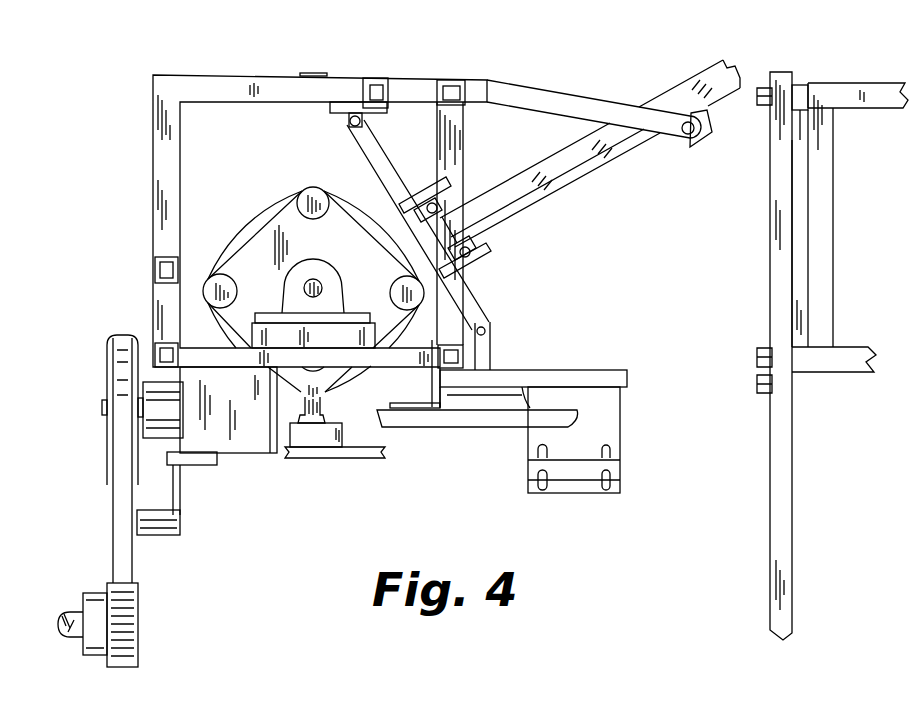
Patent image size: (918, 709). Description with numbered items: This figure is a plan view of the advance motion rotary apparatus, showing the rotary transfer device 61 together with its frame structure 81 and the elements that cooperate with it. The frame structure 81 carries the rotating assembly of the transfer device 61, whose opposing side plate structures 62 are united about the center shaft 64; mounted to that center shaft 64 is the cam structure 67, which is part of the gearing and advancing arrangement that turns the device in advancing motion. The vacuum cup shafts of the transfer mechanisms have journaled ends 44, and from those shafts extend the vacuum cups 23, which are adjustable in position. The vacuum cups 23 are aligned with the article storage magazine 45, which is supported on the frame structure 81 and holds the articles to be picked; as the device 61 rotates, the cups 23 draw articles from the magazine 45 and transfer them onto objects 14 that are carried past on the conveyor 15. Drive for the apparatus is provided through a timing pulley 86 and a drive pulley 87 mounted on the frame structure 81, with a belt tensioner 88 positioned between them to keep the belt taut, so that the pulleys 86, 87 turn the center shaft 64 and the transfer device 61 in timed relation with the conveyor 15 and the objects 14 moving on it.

The frame structure 81 is at (120, 158).
The rotary transfer device 61 is at (313, 264).
The journaled ends 44 is at (320, 197).
The cam structure 67 is at (250, 222).
The side plate structures 62 is at (366, 252).
The center shaft 64 is at (322, 293).
The article storage magazine 45 is at (575, 215).
The vacuum cups 23 is at (321, 418).
The objects 14 is at (325, 440).
The conveyor 15 is at (375, 455).
The timing pulley 86 is at (106, 385).
The drive pulley 87 is at (138, 630).
The belt tensioner 88 is at (167, 538).